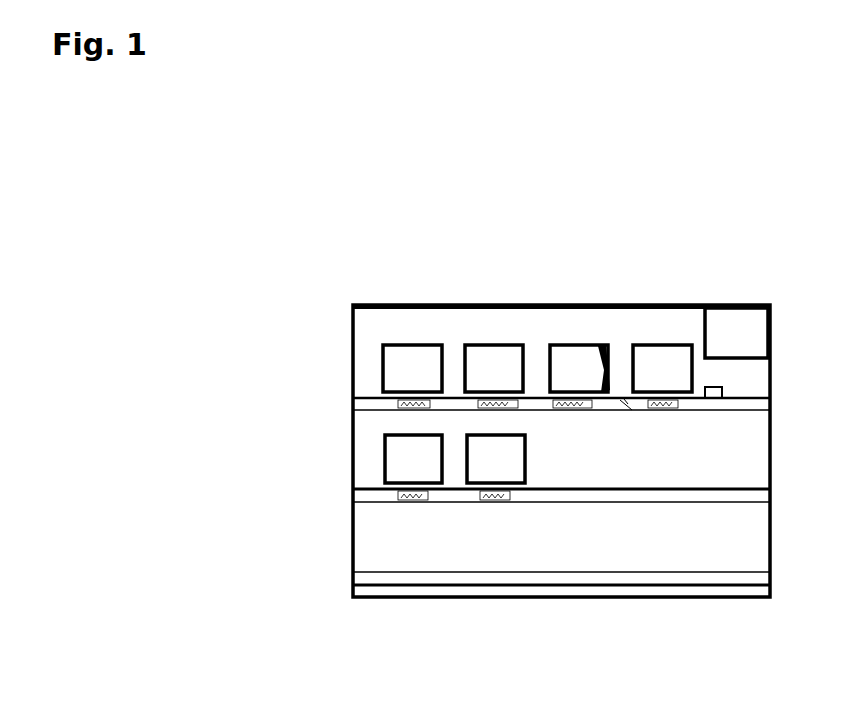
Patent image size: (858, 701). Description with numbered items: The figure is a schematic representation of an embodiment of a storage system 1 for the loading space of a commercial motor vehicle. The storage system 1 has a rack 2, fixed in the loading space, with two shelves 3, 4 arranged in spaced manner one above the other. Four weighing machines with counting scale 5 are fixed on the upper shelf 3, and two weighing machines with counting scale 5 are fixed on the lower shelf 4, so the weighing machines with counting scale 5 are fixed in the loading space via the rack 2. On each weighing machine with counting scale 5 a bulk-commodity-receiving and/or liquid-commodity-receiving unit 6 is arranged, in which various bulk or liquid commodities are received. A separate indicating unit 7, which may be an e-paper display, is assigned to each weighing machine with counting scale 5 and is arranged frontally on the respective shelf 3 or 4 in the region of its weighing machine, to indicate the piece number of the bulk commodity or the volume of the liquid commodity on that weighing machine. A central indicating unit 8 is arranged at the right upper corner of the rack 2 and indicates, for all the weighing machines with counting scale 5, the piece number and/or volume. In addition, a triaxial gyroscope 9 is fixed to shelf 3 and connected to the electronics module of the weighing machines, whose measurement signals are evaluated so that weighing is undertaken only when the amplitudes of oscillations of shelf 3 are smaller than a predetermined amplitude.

The storage system 1 is at (533, 184).
The rack 2 is at (578, 307).
The shelf 3 is at (693, 410).
The shelf 4 is at (653, 490).
The weighing machine with counting scale 5 is at (385, 482).
The bulk-commodity-receiving and/or liquid-commodity-receiving unit 6 is at (405, 460).
The indicating unit 7 is at (413, 502).
The central indicating unit 8 is at (733, 328).
The triaxial gyroscope 9 is at (723, 393).